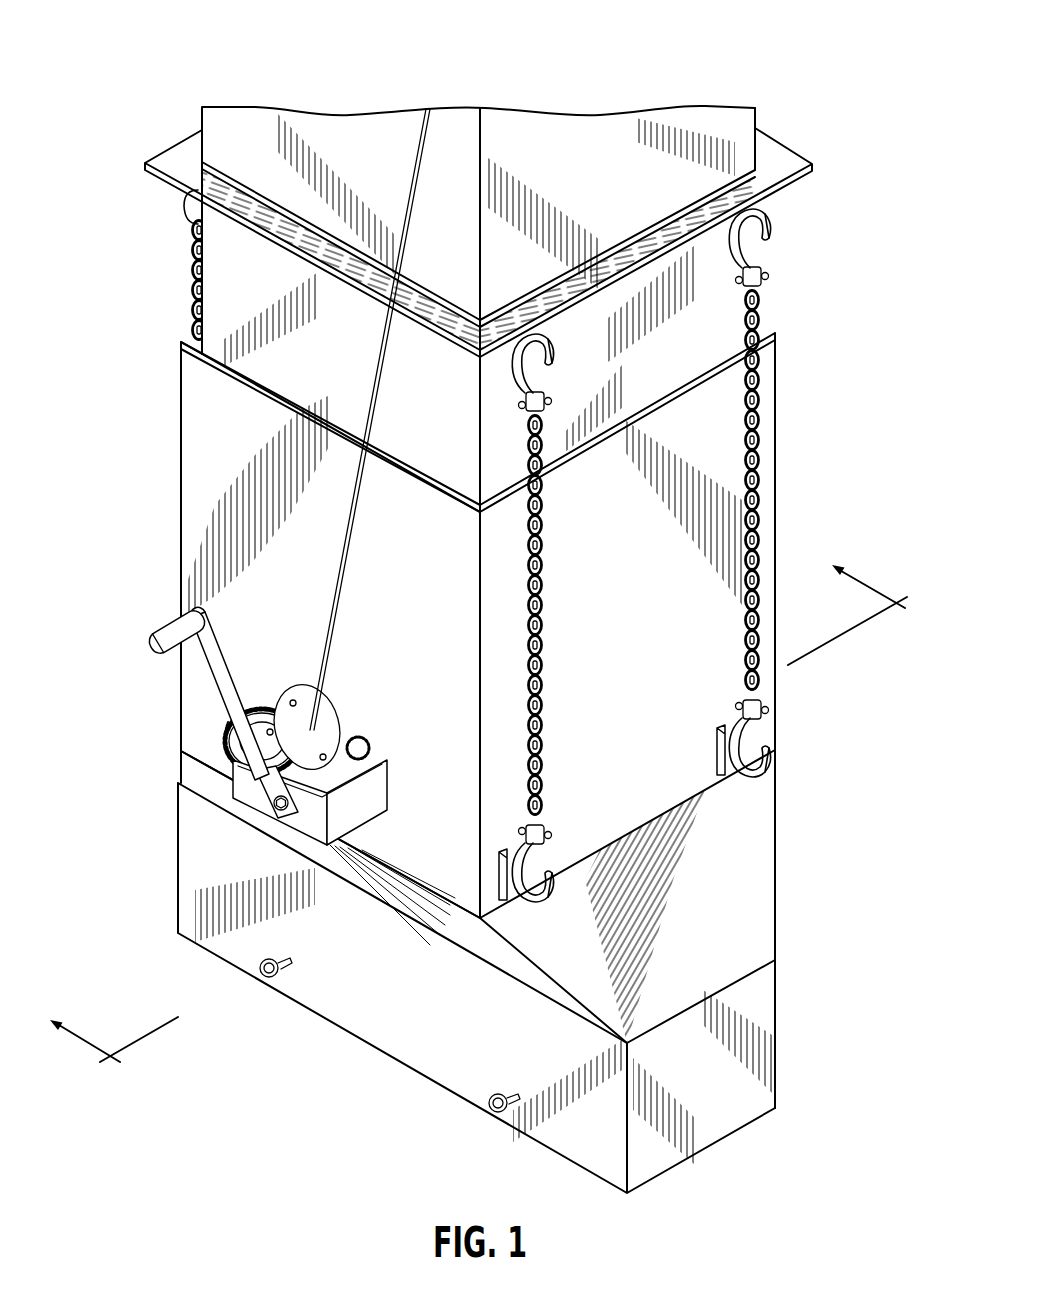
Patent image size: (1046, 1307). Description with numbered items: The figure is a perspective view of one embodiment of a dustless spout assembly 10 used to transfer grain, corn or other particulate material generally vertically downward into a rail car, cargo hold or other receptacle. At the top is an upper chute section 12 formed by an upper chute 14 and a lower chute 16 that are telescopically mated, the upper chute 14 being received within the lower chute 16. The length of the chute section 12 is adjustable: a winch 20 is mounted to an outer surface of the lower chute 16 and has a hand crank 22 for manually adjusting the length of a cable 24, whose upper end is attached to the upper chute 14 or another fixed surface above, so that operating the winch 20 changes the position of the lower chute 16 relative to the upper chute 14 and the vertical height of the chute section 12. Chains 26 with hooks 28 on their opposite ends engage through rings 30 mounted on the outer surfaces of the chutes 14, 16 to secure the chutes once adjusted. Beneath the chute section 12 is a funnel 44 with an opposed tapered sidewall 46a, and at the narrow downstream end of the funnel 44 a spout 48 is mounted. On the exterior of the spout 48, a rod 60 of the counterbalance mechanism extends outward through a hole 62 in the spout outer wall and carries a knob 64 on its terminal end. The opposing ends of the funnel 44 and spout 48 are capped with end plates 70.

The dustless spout assembly 10 is at (176, 78).
The upper chute section 12 is at (176, 381).
The upper chute 14 is at (215, 286).
The lower chute 16 is at (210, 462).
The winch 20 is at (226, 764).
The hand crank 22 is at (165, 640).
The cable 24 is at (415, 153).
The chains 26 is at (760, 383).
The hooks 28 is at (760, 253).
The rings 30 is at (770, 213).
The funnel 44 is at (783, 857).
The tapered sidewall 46a is at (430, 905).
The spout 48 is at (783, 1006).
The rod 60 is at (282, 962).
The hole 62 is at (262, 962).
The knob 64 is at (263, 980).
The end plates 70 is at (714, 1079).